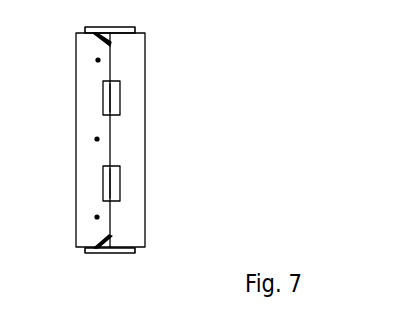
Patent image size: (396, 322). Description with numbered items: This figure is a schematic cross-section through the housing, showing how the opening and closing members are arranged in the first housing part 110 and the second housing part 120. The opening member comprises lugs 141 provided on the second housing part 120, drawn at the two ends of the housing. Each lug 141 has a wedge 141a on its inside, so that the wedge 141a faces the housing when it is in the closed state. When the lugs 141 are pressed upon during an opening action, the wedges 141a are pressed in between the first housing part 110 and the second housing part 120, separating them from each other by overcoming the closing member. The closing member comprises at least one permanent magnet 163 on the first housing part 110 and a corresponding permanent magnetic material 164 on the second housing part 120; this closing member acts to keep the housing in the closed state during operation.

The first housing part 110 is at (85, 73).
The second housing part 120 is at (124, 47).
The lug 141 is at (94, 29).
The wedge 141a is at (113, 36).
The permanent magnet 163 is at (103, 104).
The corresponding permanent magnetic material 164 is at (115, 103).